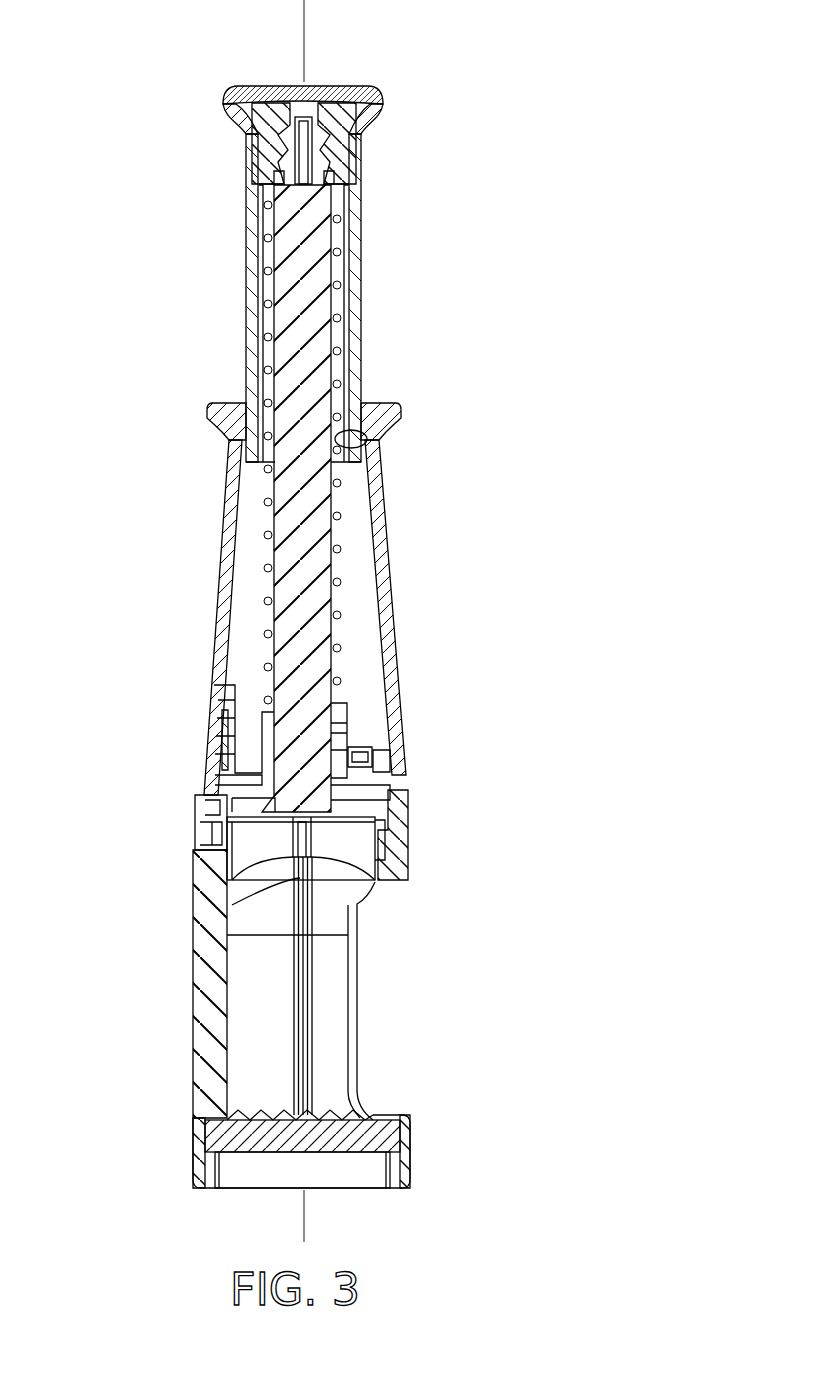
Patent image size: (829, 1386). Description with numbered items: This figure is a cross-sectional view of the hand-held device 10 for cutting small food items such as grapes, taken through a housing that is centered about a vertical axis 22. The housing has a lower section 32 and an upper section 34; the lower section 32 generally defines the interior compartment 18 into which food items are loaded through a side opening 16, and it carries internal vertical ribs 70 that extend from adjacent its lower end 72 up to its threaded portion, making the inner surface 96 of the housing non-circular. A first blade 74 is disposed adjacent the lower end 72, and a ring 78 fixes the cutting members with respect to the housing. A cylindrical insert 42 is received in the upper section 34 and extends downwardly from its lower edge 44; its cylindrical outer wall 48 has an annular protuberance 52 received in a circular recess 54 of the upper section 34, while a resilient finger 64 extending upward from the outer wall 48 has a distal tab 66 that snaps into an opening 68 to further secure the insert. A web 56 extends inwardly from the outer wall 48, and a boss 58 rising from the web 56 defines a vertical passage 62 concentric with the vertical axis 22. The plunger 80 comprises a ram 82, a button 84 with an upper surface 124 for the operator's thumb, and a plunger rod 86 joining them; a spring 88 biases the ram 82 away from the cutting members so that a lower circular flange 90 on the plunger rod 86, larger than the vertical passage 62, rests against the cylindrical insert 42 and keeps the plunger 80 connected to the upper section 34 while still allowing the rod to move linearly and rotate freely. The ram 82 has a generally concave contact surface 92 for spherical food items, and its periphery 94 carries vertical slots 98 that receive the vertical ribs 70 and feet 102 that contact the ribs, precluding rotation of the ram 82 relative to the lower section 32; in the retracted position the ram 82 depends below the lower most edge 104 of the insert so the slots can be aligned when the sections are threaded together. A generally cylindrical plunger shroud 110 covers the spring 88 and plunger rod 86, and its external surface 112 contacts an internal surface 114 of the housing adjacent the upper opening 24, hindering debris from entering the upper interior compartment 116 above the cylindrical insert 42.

The device 10 is at (340, 621).
The side opening 16 is at (358, 1058).
The interior compartment 18 is at (262, 1017).
The vertical axis 22 is at (300, 18).
The upper opening 24 is at (400, 410).
The lower section 32 is at (165, 1008).
The upper section 34 is at (313, 617).
The cylindrical insert 42 is at (392, 787).
The lower edge 44 is at (405, 806).
The cylindrical outer wall 48 is at (228, 806).
The annular protuberance 52 is at (230, 772).
The circular recess 54 is at (383, 762).
The web 56 is at (390, 860).
The boss 58 is at (345, 722).
The vertical passage 62 is at (346, 703).
The finger 64 is at (229, 736).
The distal tab 66 is at (226, 705).
The opening 68 is at (232, 688).
The vertical ribs 70 is at (314, 1022).
The lower end 72 is at (195, 1186).
The first blade 74 is at (365, 1117).
The ring 78 is at (372, 1168).
The plunger 80 is at (298, 473).
The ram 82 is at (230, 858).
The button 84 is at (258, 104).
The plunger rod 86 is at (286, 320).
The spring 88 is at (264, 283).
The lower circular flange 90 is at (226, 822).
The concave contact surface 92 is at (270, 888).
The periphery 94 is at (226, 838).
The inner surface 96 is at (244, 958).
The vertical slots 98 is at (313, 845).
The feet 102 is at (262, 905).
The lower most edge 104 is at (252, 848).
The plunger shroud 110 is at (356, 297).
The external surface 112 is at (360, 352).
The internal surface 114 is at (368, 440).
The upper interior compartment 116 is at (244, 600).
The upper surface 124 is at (327, 84).